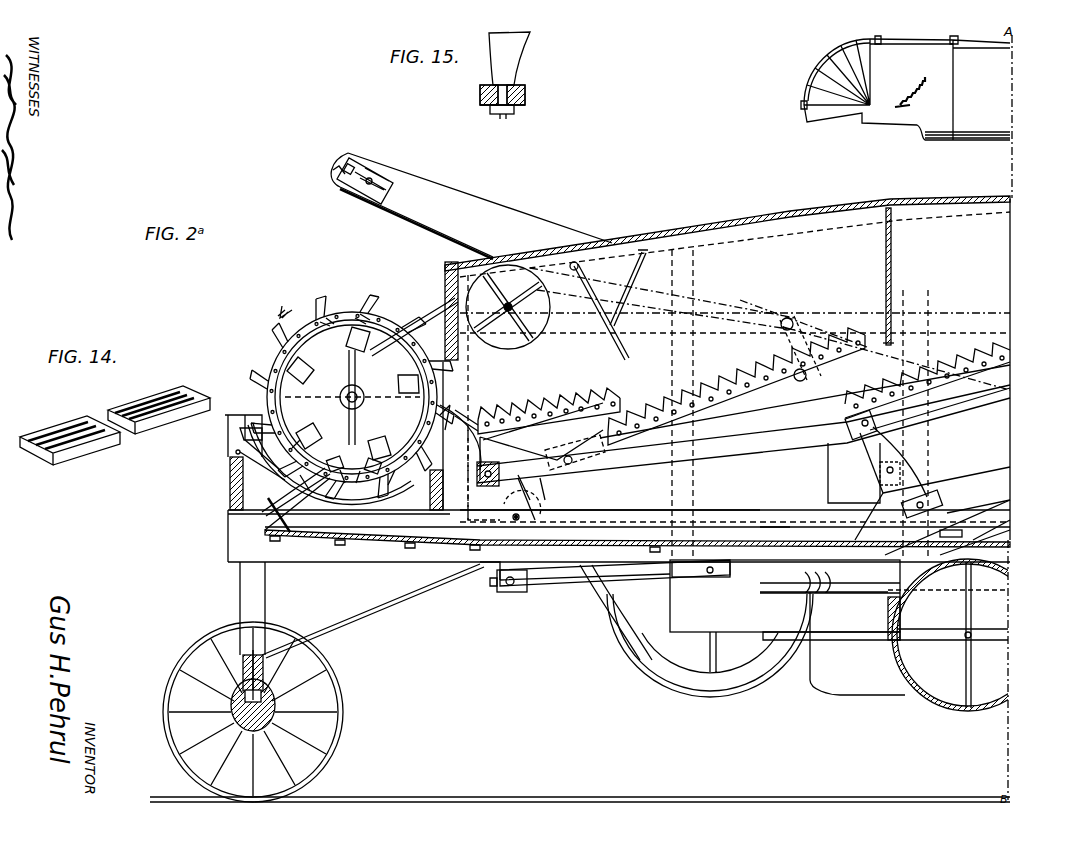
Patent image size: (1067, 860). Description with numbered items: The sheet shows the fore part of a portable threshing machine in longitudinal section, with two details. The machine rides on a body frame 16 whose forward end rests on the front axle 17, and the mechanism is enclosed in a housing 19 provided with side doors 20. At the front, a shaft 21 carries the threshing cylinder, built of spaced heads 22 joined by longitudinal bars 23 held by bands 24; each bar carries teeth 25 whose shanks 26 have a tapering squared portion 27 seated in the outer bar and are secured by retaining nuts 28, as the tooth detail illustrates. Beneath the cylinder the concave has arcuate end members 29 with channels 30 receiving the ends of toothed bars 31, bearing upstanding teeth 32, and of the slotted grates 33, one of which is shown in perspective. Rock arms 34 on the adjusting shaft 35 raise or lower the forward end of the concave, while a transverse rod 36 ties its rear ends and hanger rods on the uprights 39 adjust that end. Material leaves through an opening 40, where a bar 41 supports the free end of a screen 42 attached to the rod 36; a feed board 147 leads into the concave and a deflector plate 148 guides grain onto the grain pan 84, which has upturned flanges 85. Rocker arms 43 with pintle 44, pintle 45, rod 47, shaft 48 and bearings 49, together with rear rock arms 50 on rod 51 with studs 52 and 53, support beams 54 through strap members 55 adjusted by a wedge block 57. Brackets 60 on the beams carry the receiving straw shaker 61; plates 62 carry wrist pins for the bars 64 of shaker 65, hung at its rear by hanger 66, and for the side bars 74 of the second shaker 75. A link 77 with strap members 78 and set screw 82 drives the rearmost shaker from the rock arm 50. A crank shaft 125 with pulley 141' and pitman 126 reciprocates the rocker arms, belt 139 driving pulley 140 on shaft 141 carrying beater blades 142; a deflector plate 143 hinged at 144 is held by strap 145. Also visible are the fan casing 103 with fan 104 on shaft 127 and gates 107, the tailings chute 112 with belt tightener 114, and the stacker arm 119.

In FIG. 2a, the body frame 16 is at (368, 565).
In FIG. 2a, the front axle 17 is at (285, 700).
In FIG. 2a, the housing 19 is at (826, 216).
In FIG. 2a, the doors 20 is at (699, 479).
In FIG. 2a, the shaft 21 is at (357, 392).
In FIG. 2a, the heads 22 is at (352, 393).
In FIG. 15, the bars 23 is at (525, 97).
In FIG. 2a, the bars 23 is at (340, 315).
In FIG. 2a, the bands 24 is at (395, 290).
In FIG. 15, the teeth 25 is at (520, 70).
In FIG. 2a, the teeth 25 is at (320, 310).
In FIG. 15, the shanks 26 is at (481, 106).
In FIG. 15, the squared portion 27 is at (480, 92).
In FIG. 15, the retaining nuts 28 is at (498, 117).
In FIG. 2a, the arcuate end members 29 is at (242, 494).
In FIG. 2a, the arcuate channel 30 is at (258, 414).
In FIG. 2a, the bars 31 is at (272, 522).
In FIG. 2a, the teeth 32 is at (335, 455).
In FIG. 14, the screens or grates 33 is at (90, 445).
In FIG. 2a, the screens or grates 33 is at (395, 540).
In FIG. 2a, the rock arms 34 is at (243, 440).
In FIG. 2a, the adjusting shaft 35 is at (238, 452).
In FIG. 2a, the transverse rod 36 is at (427, 490).
In FIG. 2a, the uprights 39 is at (240, 428).
In FIG. 2a, the opening 40 is at (455, 408).
In FIG. 2a, the rod or bar 41 is at (470, 440).
In FIG. 2a, the screen 42 is at (474, 410).
In FIG. 2a, the rocker arms 43 is at (478, 568).
In FIG. 2a, the boss or pintle 44 is at (491, 465).
In FIG. 2a, the pintle 45 is at (537, 522).
In FIG. 2a, the rod 47 is at (508, 592).
In FIG. 2a, the shaft or rod 48 is at (517, 522).
In FIG. 2a, the bearings 49 is at (525, 516).
In FIG. 2a, the rock arms 50 is at (900, 442).
In FIG. 2a, the rod or bar 51 is at (880, 482).
In FIG. 2a, the stud or pintle 52 is at (896, 412).
In FIG. 2a, the stud or pintle 53 is at (940, 498).
In FIG. 2a, the beams 54 is at (760, 452).
In FIG. 2a, the strap members 55 is at (843, 415).
In FIG. 2a, the wedge block 57 is at (850, 443).
In FIG. 2a, the brackets 60 is at (530, 452).
In FIG. 2a, the receiving straw shaker 61 is at (562, 400).
In FIG. 2a, the plate 62 is at (590, 478).
In FIG. 2a, the longitudinal bars 64 is at (770, 410).
In FIG. 2a, the straw shaker 65 is at (648, 410).
In FIG. 2a, the hanger 66 is at (822, 310).
In FIG. 2a, the side bars 74 is at (1005, 382).
In FIG. 2a, the second straw shaker 75 is at (960, 360).
In FIG. 2a, the link or bar 77 is at (1005, 478).
In FIG. 2a, the strap member 78 is at (1005, 515).
In FIG. 2a, the set screw 82 is at (895, 505).
In FIG. 2a, the grain pan 84 is at (772, 525).
In FIG. 2a, the flanges 85 is at (700, 524).
In FIG. 2a, the fan casing 103 is at (922, 680).
In FIG. 2a, the fan 104 is at (968, 700).
In FIG. 2a, the gates 107 is at (884, 642).
In FIG. 2a, the chute or conveyer housing 112 is at (552, 222).
In FIG. 2a, the belt tightener 114 is at (388, 175).
In FIG. 2a, the stacker tube or arm 119 is at (906, 116).
In FIG. 2a, the crank shaft 125 is at (712, 590).
In FIG. 2a, the pitman 126 is at (652, 578).
In FIG. 2a, the shaft 127 is at (960, 638).
In FIG. 2a, the belt 139 is at (445, 275).
In FIG. 2a, the belt pulley 140 is at (886, 245).
In FIG. 2a, the shaft 141 is at (530, 307).
In FIG. 2a, the pulley 141' is at (709, 645).
In FIG. 2a, the beater blades 142 is at (480, 260).
In FIG. 2a, the check or deflector plate 143 is at (612, 300).
In FIG. 2a, the hinge 144 is at (583, 262).
In FIG. 2a, the strap 145 is at (632, 283).
In FIG. 2a, the feed board 147 is at (232, 414).
In FIG. 2a, the deflector plate 148 is at (250, 510).